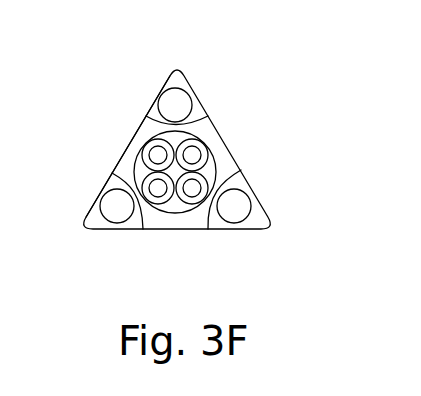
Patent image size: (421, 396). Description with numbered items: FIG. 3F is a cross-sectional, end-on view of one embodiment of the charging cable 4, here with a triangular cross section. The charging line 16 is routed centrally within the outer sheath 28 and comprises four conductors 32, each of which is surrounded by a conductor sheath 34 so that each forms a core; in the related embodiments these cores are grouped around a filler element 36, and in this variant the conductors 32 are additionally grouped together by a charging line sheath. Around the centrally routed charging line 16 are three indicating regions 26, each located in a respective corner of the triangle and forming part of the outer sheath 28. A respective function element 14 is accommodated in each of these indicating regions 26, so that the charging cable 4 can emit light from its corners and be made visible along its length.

The charging cable 4 is at (74, 113).
The function element 14 is at (238, 204).
The charging line 16 is at (137, 141).
The indicating region 26 is at (241, 169).
The outer sheath 28 is at (213, 127).
The conductor 32 is at (155, 208).
The conductor sheath 34 is at (168, 206).
The filler element 36 is at (143, 230).